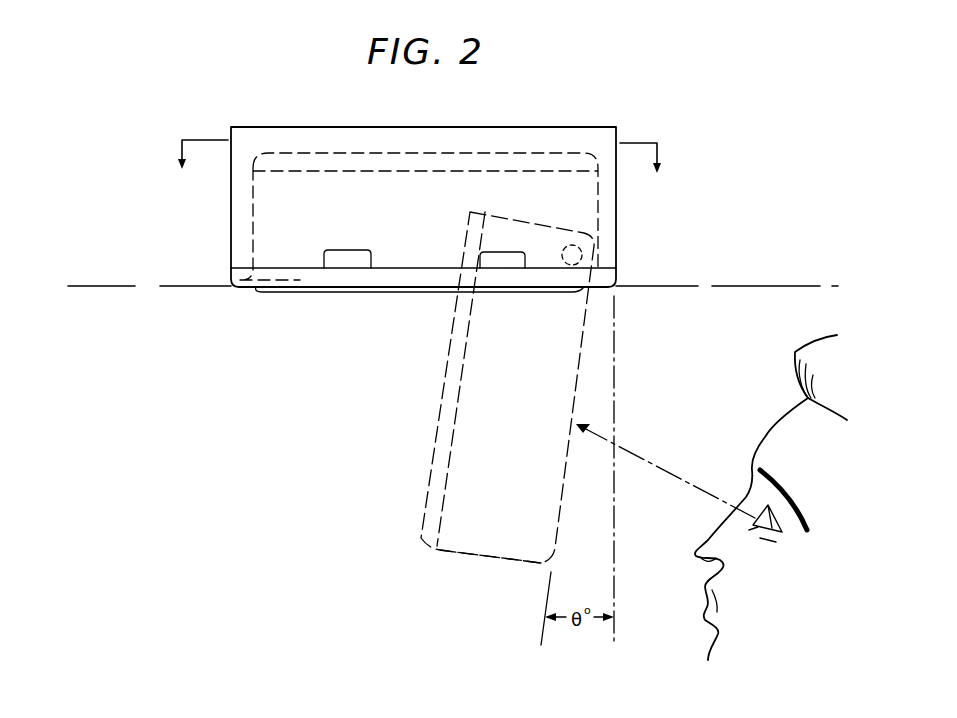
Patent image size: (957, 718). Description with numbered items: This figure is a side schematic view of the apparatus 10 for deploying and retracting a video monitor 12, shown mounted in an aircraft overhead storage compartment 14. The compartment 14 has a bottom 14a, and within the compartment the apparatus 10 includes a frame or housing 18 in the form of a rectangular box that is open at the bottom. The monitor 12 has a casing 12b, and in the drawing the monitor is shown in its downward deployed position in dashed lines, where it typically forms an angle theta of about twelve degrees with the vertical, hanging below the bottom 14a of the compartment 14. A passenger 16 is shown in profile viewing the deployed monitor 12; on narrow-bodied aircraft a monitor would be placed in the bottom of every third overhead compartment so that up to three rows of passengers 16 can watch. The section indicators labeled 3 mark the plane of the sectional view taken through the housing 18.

The apparatus 10 is at (498, 142).
The video monitor 12 is at (517, 450).
The casing 12b is at (466, 557).
The aircraft overhead storage compartment 14 is at (588, 127).
The bottom of the compartment 14a is at (323, 289).
The passengers 16 is at (765, 437).
The frame or housing 18 is at (598, 232).
The section line of FIG. 3 is at (419, 169).